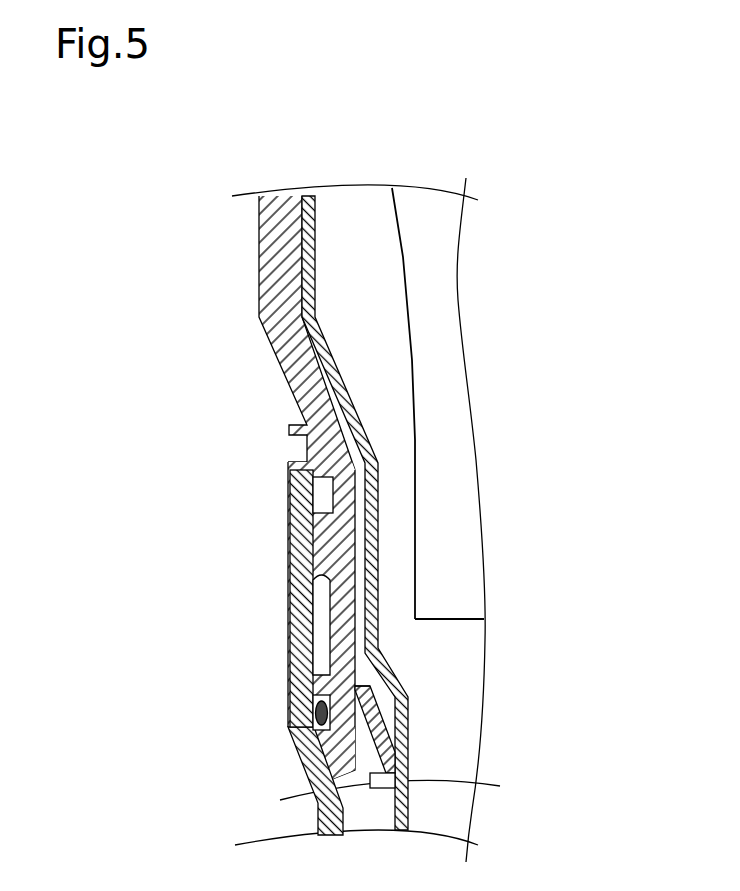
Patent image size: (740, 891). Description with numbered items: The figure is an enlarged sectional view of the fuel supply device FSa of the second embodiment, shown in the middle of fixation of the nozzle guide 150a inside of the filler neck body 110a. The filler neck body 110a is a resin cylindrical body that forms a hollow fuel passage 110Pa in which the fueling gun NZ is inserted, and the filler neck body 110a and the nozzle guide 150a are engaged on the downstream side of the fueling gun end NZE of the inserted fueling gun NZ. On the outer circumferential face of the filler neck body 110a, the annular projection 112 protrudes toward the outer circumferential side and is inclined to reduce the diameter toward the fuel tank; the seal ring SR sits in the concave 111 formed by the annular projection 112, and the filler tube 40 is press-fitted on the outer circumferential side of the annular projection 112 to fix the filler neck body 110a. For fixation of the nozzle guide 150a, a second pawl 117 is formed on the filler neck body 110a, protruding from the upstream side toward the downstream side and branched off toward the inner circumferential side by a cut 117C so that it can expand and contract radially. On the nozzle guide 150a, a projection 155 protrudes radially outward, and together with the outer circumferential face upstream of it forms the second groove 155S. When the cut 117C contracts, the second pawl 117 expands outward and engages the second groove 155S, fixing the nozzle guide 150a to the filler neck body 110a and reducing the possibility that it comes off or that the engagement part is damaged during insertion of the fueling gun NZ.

The fuel supply device FSa is at (553, 195).
The fueling gun NZ is at (447, 342).
The fueling gun end NZE is at (458, 622).
The filler neck body 110a is at (273, 292).
The fuel passage 110Pa is at (377, 267).
The filler tube 40 is at (292, 607).
The cut 117C is at (355, 758).
The concave 111 is at (308, 762).
The annular projection 112 is at (325, 575).
The seal ring SR is at (312, 713).
The nozzle guide 150a is at (383, 548).
The second pawl 117 is at (410, 722).
The second groove 155S is at (392, 712).
The projection 155 is at (410, 783).